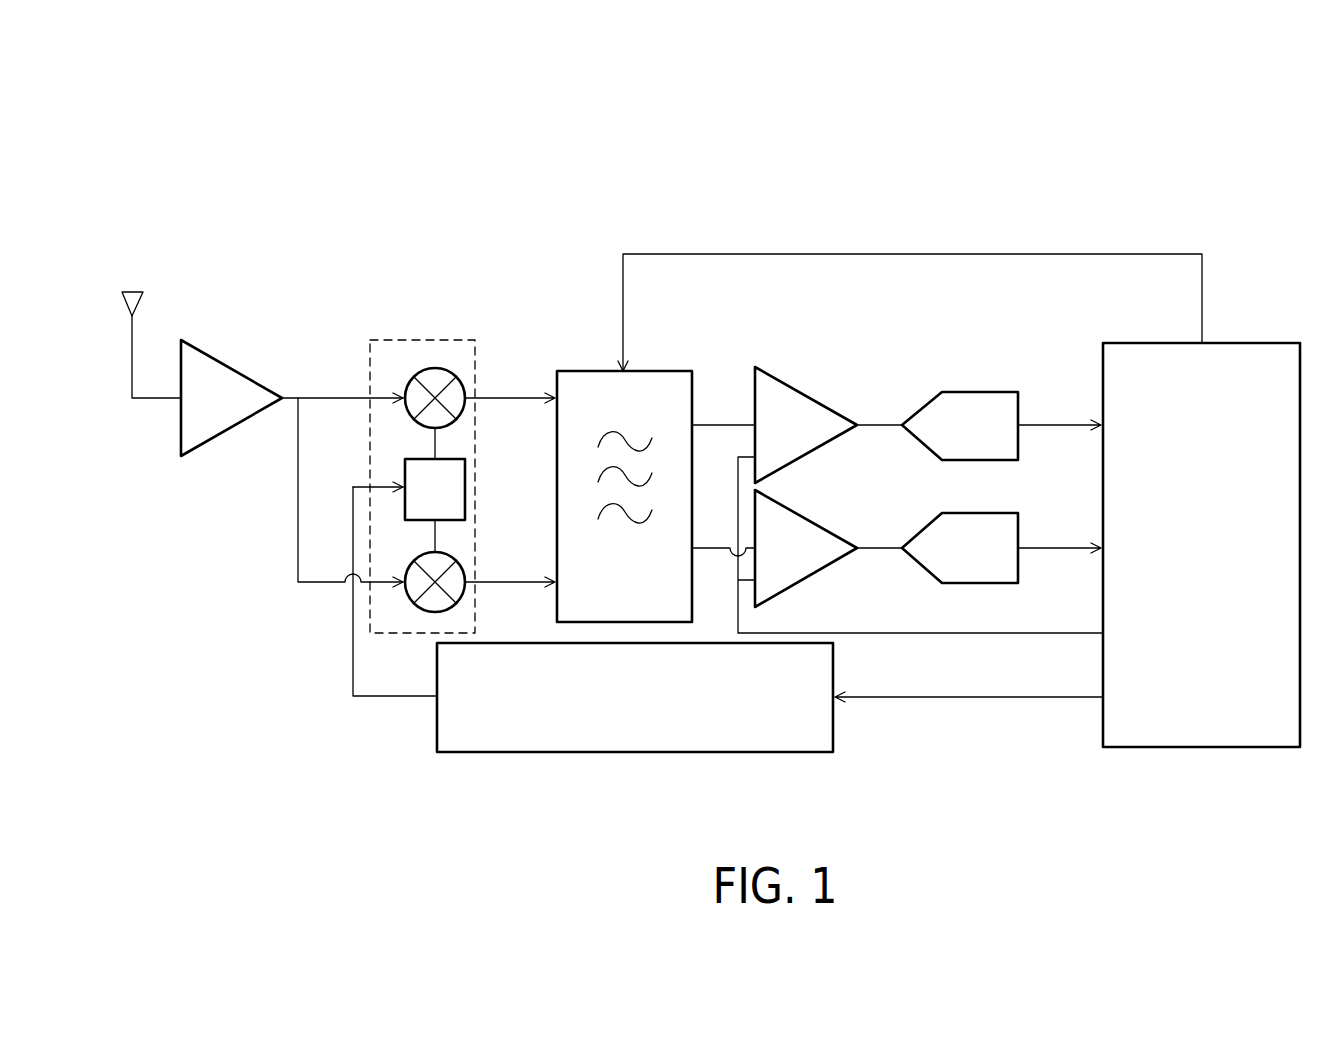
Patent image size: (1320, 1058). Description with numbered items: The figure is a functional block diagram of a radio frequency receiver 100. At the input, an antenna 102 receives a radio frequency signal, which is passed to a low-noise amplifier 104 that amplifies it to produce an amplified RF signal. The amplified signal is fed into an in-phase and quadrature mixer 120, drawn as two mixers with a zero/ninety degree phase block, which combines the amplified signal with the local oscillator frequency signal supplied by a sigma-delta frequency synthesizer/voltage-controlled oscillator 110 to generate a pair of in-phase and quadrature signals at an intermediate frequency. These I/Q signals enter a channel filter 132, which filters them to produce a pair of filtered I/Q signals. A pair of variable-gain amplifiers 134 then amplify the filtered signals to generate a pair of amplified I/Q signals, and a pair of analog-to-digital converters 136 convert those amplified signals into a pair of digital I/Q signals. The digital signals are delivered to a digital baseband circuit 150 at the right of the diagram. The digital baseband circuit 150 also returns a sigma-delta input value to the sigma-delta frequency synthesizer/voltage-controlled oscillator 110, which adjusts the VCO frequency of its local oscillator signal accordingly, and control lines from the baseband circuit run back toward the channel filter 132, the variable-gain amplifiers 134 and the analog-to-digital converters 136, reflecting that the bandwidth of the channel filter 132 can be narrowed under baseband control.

The radio frequency receiver 100 is at (1180, 127).
The antenna 102 is at (128, 290).
The low-noise amplifier 104 is at (220, 358).
The sigma-delta frequency synthesizer/voltage-controlled oscillator 110 is at (623, 753).
The in-phase and quadrature mixer 120 is at (448, 339).
The channel filter 132 is at (585, 370).
The variable-gain amplifiers 134 is at (825, 388).
The analog-to-digital converters 136 is at (982, 391).
The digital baseband circuit 150 is at (1249, 342).